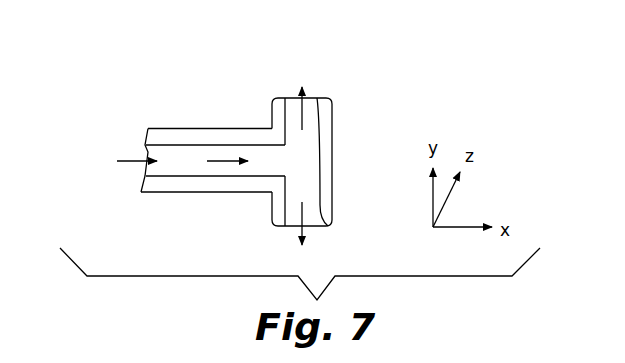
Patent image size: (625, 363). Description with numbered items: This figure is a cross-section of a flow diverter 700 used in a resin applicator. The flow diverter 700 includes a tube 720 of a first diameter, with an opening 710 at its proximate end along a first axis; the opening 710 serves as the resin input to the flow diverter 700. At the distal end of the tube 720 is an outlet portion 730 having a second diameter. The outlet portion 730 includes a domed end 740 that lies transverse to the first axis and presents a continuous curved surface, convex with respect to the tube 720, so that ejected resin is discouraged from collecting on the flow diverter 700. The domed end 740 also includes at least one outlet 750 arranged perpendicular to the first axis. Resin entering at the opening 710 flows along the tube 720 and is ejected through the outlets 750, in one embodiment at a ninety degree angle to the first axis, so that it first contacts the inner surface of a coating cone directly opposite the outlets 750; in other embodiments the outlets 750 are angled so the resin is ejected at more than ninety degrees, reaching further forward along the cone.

The flow diverter 700 is at (236, 62).
The opening 710 is at (130, 160).
The tube 720 is at (202, 127).
The outlet portion 730 is at (323, 226).
The domed end 740 is at (333, 167).
The outlet 750 is at (302, 110).